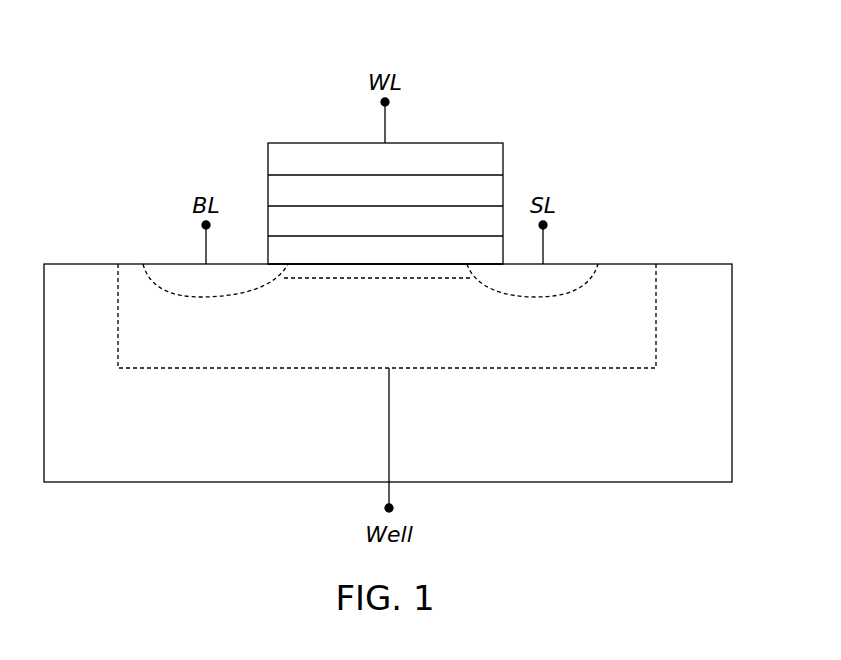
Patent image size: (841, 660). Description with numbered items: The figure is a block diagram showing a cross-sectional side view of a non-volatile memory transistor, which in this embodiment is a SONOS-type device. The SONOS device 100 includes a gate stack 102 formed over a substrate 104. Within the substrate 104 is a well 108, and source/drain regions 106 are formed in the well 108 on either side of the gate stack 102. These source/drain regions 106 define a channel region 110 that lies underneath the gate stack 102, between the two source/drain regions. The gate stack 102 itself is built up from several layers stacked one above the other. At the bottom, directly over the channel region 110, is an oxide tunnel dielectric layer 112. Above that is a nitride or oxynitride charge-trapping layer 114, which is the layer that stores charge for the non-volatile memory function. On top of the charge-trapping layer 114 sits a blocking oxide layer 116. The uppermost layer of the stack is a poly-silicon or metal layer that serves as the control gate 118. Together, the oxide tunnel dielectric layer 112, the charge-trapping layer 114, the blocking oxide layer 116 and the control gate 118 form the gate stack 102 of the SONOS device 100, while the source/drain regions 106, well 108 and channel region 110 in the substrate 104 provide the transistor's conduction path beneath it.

The SONOS device 100 is at (364, 24).
The gate stack 102 is at (250, 148).
The substrate 104 is at (328, 426).
The source/drain regions 106 is at (187, 291).
The well 108 is at (343, 330).
The channel region 110 is at (405, 279).
The oxide tunnel dielectric layer 112 is at (365, 262).
The charge-trapping layer 114 is at (365, 233).
The blocking oxide layer 116 is at (365, 202).
The control gate 118 is at (365, 171).